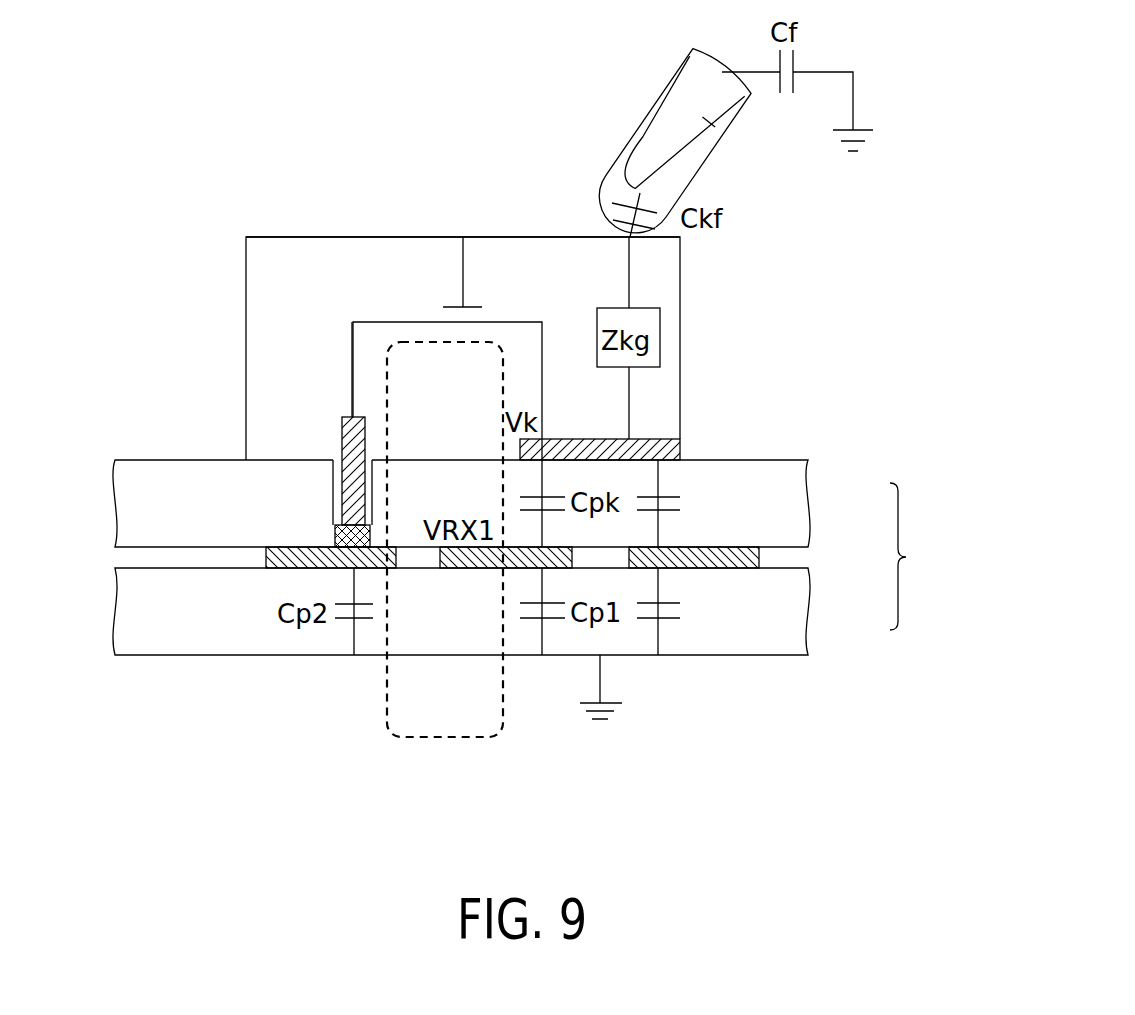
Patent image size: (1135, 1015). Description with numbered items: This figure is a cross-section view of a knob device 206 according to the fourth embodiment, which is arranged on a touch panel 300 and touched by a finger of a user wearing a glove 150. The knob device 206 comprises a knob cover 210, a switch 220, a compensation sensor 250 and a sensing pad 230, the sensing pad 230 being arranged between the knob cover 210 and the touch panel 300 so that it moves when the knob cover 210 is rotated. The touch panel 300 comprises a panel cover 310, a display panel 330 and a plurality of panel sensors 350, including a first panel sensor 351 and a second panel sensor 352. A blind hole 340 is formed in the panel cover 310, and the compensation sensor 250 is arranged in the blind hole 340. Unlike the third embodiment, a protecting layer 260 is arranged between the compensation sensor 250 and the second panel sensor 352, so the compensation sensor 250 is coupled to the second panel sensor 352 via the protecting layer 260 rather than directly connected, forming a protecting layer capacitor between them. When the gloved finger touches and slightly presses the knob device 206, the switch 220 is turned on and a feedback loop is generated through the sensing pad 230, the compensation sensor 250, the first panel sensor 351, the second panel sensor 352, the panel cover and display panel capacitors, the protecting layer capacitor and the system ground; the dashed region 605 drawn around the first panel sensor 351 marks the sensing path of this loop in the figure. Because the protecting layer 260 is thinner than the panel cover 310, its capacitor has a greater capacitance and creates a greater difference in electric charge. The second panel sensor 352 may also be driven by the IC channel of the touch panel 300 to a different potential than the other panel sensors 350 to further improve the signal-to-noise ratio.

The knob device 206 is at (314, 180).
The knob cover 210 is at (385, 237).
The switch 220 is at (463, 275).
The glove 150 is at (622, 140).
The panel cover 310 is at (808, 500).
The display panel 330 is at (808, 612).
The touch panel 300 is at (923, 556).
The blind hole 340 is at (372, 462).
The compensation sensor 250 is at (350, 482).
The protecting layer 260 is at (335, 535).
The sensing pad 230 is at (672, 450).
The second panel sensor 352 is at (268, 568).
The first panel sensor 351 is at (477, 568).
The panel sensors 350 is at (730, 568).
The sensing region 605 is at (443, 737).